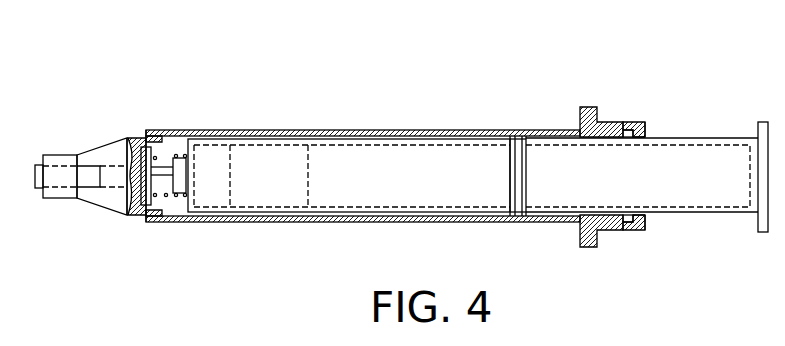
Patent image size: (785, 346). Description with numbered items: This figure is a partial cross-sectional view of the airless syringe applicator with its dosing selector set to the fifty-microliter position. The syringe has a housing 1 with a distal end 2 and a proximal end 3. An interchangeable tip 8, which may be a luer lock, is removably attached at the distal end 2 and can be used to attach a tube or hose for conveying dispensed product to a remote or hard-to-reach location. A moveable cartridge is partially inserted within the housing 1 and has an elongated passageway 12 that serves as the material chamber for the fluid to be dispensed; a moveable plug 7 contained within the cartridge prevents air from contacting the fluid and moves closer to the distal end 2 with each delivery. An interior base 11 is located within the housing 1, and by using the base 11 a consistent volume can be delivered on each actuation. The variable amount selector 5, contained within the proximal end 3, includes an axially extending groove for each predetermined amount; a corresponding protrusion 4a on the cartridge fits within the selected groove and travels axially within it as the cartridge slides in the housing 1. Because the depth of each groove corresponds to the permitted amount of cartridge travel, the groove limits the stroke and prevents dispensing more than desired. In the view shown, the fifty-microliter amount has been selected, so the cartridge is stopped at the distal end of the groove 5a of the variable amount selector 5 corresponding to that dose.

The housing 1 is at (408, 128).
The distal end 2 is at (103, 140).
The proximal end 3 is at (588, 106).
The protrusion 4a is at (638, 128).
The variable amount selector 5 is at (631, 122).
The groove 5a is at (647, 133).
The moveable plug 7 is at (263, 163).
The interchangeable tip 8 is at (37, 168).
The interior base 11 is at (163, 137).
The elongated passageway 12 is at (477, 193).